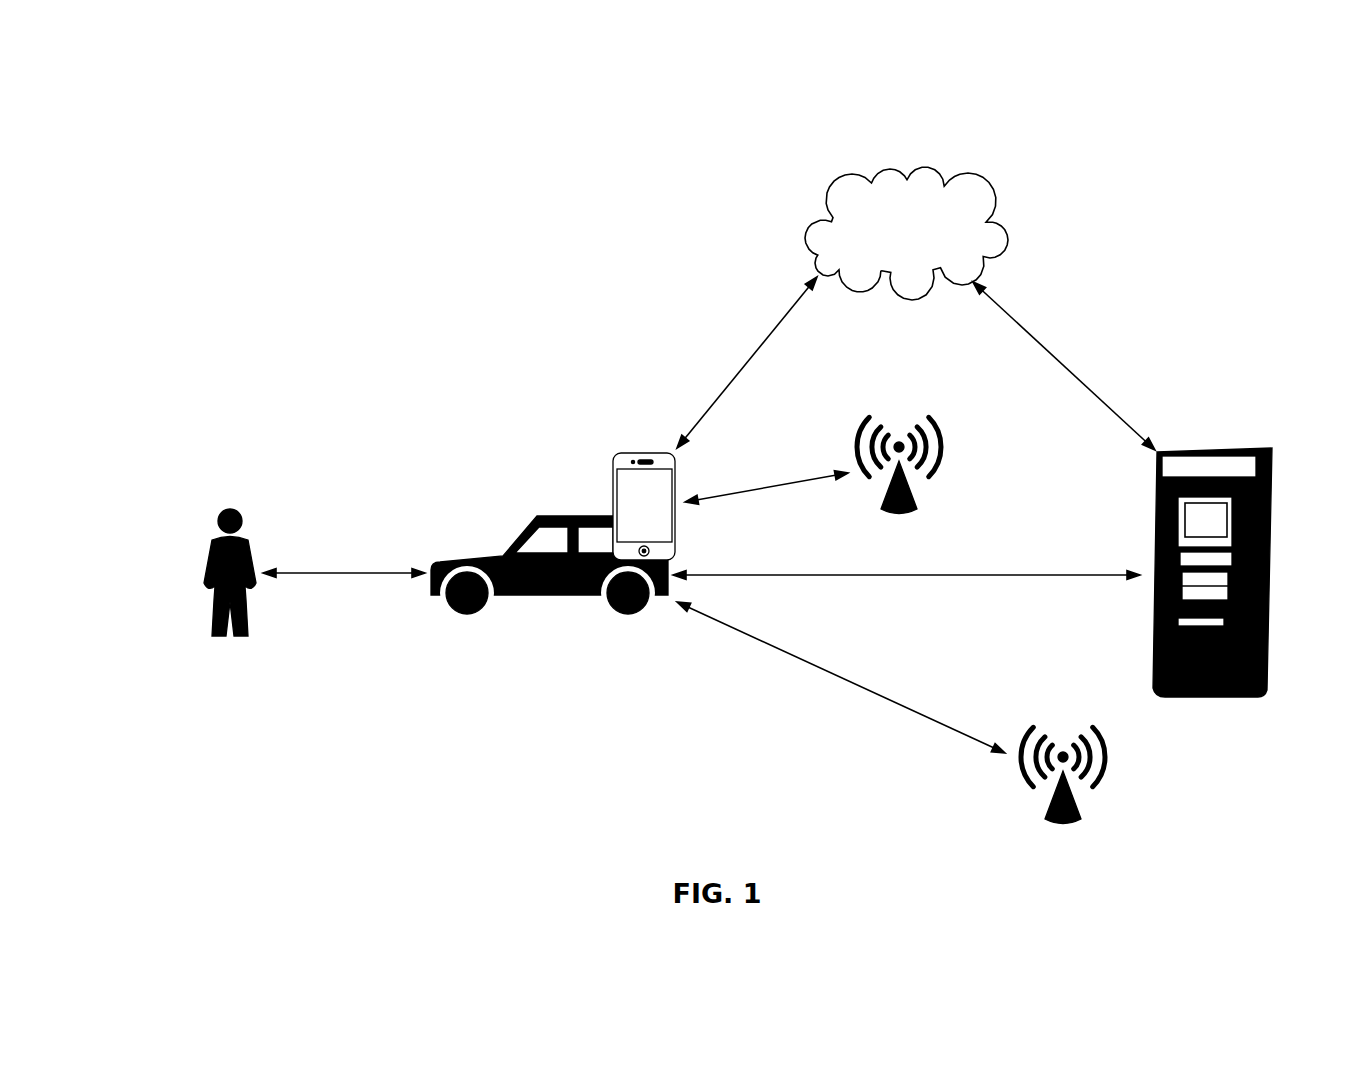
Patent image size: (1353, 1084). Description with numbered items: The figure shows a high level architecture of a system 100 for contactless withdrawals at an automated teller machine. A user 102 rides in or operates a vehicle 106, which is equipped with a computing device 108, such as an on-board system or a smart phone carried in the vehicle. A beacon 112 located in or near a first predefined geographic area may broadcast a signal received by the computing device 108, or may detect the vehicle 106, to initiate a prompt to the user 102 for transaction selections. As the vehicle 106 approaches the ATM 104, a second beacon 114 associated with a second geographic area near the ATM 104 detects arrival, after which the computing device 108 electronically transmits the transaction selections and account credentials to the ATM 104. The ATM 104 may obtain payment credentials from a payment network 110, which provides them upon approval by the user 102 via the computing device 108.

The system 100 is at (148, 110).
The user 102 is at (210, 545).
The ATM 104 is at (1233, 448).
The vehicle 106 is at (548, 513).
The computing device 108 is at (644, 452).
The payment network 110 is at (843, 183).
The beacon 112 is at (940, 432).
The second beacon 114 is at (1047, 813).